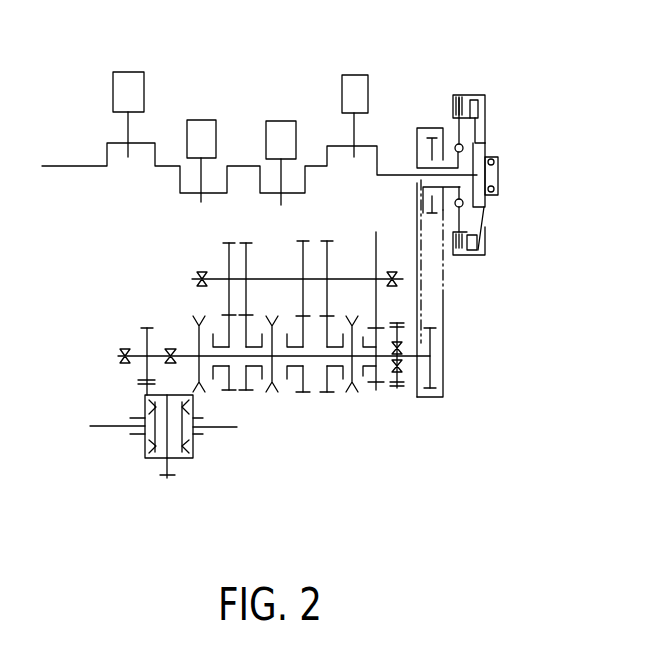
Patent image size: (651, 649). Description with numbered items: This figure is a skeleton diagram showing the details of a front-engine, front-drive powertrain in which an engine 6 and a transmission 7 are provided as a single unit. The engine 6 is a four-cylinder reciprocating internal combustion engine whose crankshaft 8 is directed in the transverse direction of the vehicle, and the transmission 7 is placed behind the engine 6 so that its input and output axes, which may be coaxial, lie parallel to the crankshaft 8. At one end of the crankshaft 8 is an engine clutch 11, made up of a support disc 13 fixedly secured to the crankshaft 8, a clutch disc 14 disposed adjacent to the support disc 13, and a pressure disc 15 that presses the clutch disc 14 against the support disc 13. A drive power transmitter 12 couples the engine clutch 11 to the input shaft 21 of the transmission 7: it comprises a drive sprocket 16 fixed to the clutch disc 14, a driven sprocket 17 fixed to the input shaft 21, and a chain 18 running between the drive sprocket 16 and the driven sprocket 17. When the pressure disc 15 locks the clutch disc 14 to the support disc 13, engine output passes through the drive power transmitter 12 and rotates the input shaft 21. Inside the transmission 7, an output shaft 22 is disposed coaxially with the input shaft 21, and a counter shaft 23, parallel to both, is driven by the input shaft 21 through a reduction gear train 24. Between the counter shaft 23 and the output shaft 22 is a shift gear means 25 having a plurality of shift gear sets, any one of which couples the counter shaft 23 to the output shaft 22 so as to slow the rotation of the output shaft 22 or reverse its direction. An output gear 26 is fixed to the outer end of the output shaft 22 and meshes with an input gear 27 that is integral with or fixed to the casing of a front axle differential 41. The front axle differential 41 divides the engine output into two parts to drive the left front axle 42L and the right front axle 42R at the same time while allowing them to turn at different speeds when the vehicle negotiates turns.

The engine 6 is at (292, 86).
The crankshaft 8 is at (318, 170).
The engine clutch 11 is at (486, 130).
The support disc 13 is at (490, 124).
The clutch disc 14 is at (455, 95).
The pressure disc 15 is at (489, 100).
The drive sprocket 16 is at (430, 138).
The chain 18 is at (446, 291).
The drive power transmitter 12 is at (456, 306).
The counter shaft 23 is at (265, 277).
The input shaft 21 is at (407, 360).
The output gear 26 is at (147, 326).
The output shaft 22 is at (188, 352).
The shift gear means 25 is at (338, 392).
The transmission 7 is at (335, 406).
The reduction gear train 24 is at (372, 392).
The driven sprocket 17 is at (443, 397).
The front axle differential 41 is at (202, 440).
The left front axle 42L is at (102, 430).
The right front axle 42R is at (237, 430).
The input gear 27 is at (141, 477).